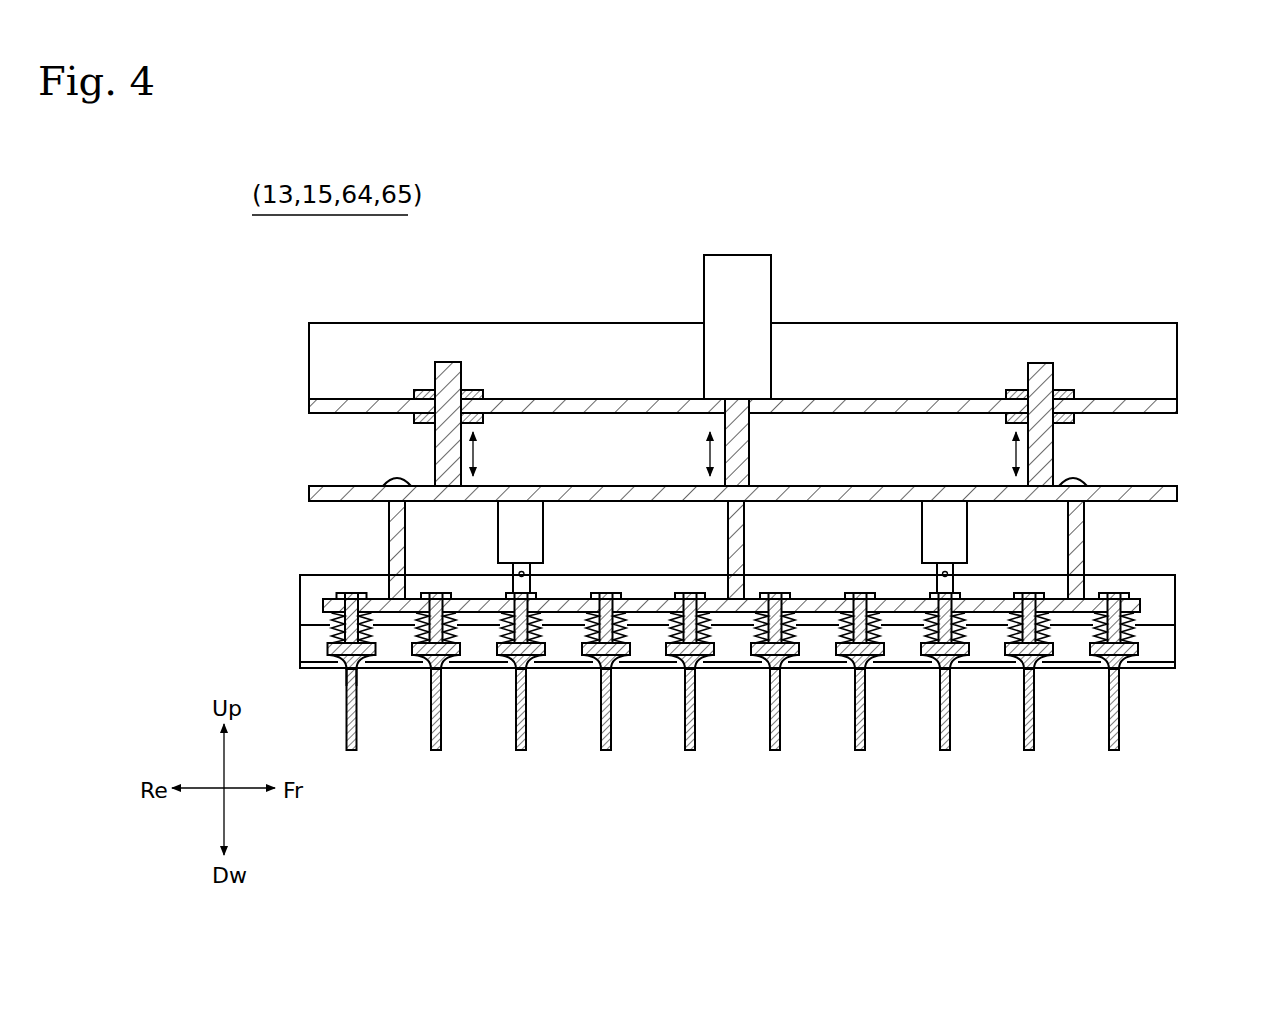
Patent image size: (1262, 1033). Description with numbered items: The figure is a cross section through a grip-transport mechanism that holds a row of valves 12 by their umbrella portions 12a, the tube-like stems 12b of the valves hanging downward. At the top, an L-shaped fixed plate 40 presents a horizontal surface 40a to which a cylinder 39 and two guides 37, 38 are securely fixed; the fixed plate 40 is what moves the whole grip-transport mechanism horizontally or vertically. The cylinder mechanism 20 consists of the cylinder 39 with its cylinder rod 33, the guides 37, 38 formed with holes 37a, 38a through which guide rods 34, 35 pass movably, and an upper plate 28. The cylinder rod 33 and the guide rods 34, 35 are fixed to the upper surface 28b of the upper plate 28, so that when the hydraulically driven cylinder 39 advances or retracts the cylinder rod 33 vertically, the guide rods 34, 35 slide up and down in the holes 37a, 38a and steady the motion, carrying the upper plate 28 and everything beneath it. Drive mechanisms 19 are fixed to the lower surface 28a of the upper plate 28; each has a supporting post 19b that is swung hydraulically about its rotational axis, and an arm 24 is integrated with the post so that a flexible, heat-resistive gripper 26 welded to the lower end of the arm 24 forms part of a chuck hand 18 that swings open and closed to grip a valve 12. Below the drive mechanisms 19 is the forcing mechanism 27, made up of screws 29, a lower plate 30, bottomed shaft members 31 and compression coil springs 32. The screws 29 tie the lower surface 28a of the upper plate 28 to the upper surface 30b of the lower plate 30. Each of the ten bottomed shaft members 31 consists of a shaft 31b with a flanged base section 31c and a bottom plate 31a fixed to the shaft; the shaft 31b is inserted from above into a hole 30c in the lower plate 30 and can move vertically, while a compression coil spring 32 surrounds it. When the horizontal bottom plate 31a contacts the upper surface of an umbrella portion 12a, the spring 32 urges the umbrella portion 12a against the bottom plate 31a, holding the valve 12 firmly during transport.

The valve 12 is at (773, 735).
The umbrella portion 12a is at (360, 660).
The tube side portion 12b is at (1121, 718).
The chuck hand 18 is at (298, 597).
The drive mechanism 19 is at (543, 522).
The supporting post 19b is at (531, 572).
The cylinder mechanism 20 is at (768, 238).
The arm 24 is at (1172, 599).
The gripper 26 is at (1173, 650).
The forcing mechanism 27 is at (378, 590).
The upper plate 28 is at (1180, 493).
The lower surface of upper plate 28a is at (668, 503).
The upper surface of upper plate 28b is at (604, 486).
The screw 29 is at (405, 520).
The lower plate 30 is at (1137, 601).
The upper surface of lower plate 30b is at (827, 597).
The hole 30c is at (1116, 594).
The bottomed shaft member 31 is at (791, 667).
The bottom plate 31a is at (1137, 656).
The shaft 31b is at (1137, 628).
The flanged base section 31c is at (1140, 598).
The compression coil spring 32 is at (1092, 628).
The cylinder rod 33 is at (750, 450).
The guide rod 34 is at (436, 447).
The guide rod 35 is at (1055, 453).
The guide 37 is at (480, 391).
The hole 37a is at (434, 390).
The guide 38 is at (1072, 392).
The hole 38a is at (1027, 392).
The cylinder 39 is at (758, 290).
The fixed plate 40 is at (1180, 322).
The horizontal surface of fixed plate 40a is at (1180, 407).